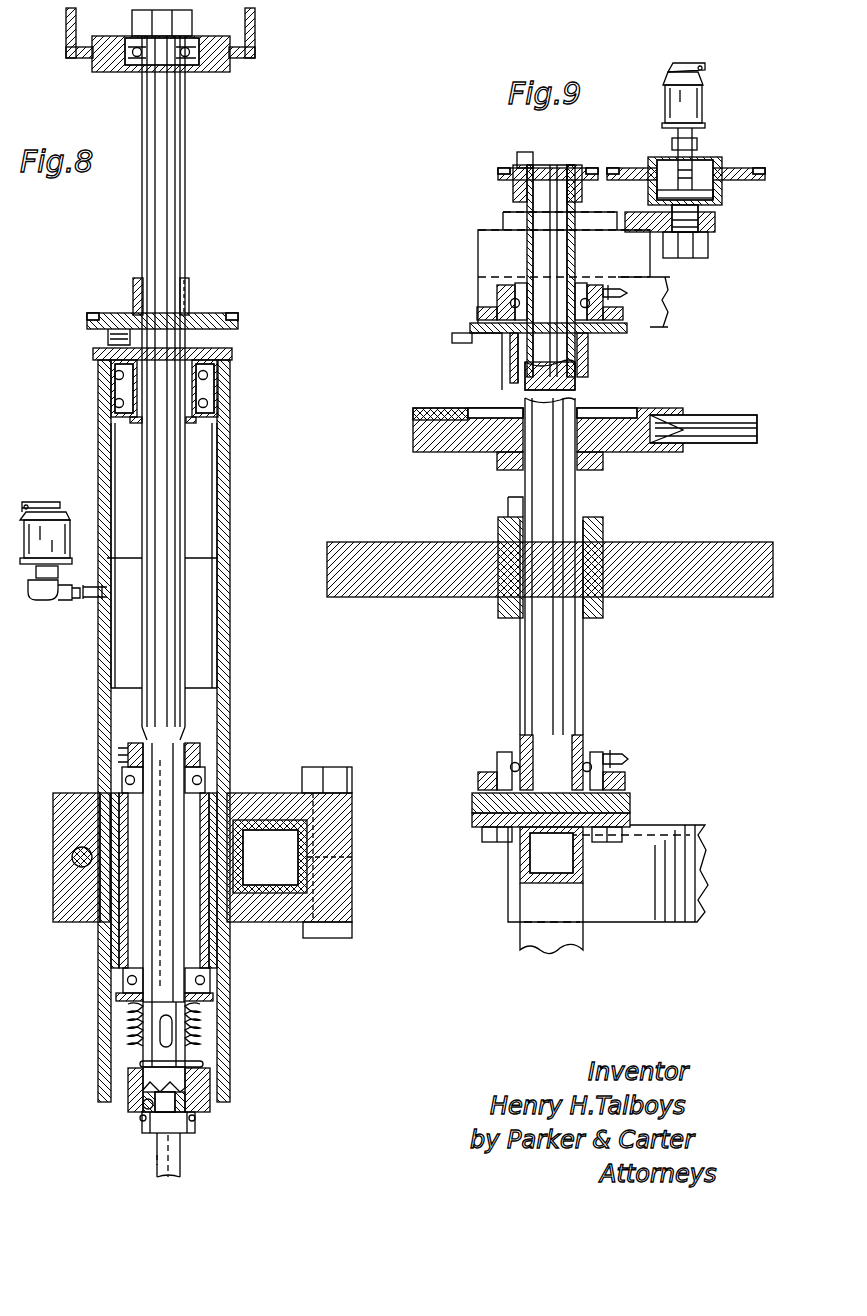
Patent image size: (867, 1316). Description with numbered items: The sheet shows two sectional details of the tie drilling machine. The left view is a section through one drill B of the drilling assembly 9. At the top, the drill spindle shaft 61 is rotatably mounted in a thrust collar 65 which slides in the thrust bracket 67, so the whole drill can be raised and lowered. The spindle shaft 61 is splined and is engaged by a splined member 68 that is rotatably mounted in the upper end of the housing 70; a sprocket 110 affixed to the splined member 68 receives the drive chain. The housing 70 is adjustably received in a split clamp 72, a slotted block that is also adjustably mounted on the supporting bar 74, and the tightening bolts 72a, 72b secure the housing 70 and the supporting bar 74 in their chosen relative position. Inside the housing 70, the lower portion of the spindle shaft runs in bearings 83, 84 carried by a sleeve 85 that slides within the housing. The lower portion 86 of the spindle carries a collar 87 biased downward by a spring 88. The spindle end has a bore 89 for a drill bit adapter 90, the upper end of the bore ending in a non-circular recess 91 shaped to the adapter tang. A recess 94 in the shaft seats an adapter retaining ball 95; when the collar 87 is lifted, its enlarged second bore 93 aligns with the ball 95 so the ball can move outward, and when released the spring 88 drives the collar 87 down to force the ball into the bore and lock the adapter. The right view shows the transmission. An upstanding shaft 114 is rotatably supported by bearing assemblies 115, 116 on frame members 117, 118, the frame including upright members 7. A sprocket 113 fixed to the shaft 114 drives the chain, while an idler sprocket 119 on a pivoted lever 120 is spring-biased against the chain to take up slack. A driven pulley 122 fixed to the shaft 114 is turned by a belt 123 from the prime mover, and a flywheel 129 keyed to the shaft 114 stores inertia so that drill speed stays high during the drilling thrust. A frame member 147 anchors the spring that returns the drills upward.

In FIG. 8, the thrust bracket 67 is at (256, 44).
In FIG. 8, the thrust collar 65 is at (208, 72).
In FIG. 8, the drill spindle shaft 61 is at (186, 214).
In FIG. 8, the splined member 68 is at (190, 290).
In FIG. 8, the sprocket 110 is at (222, 313).
In FIG. 8, the housing 70 is at (230, 497).
In FIG. 8, the split clamp 72 is at (66, 793).
In FIG. 8, the tightening bolt 72a is at (327, 767).
In FIG. 8, the tightening bolt 72b is at (72, 857).
In FIG. 8, the bearing 83 is at (202, 778).
In FIG. 8, the sleeve 85 is at (116, 940).
In FIG. 8, the supporting bar 74 is at (270, 900).
In FIG. 8, the bearing 84 is at (205, 982).
In FIG. 8, the lower portion of the spindle shaft 86 is at (186, 1010).
In FIG. 8, the non-circular recess 91 is at (160, 1033).
In FIG. 8, the spring 88 is at (205, 1045).
In FIG. 8, the drill B is at (246, 1063).
In FIG. 8, the collar 87 is at (210, 1085).
In FIG. 8, the adapter retaining ball 95 is at (143, 1104).
In FIG. 8, the recess 94 is at (140, 1119).
In FIG. 8, the second bore 93 is at (195, 1118).
In FIG. 8, the bore 89 is at (178, 1138).
In FIG. 8, the drill bit adapter 90 is at (155, 1152).
In FIG. 8, the drilling assembly 9 is at (192, 1164).
In FIG. 9, the sprocket 113 is at (560, 160).
In FIG. 9, the idler sprocket 119 is at (740, 168).
In FIG. 9, the lever 120 is at (715, 225).
In FIG. 9, the frame member 147 is at (470, 343).
In FIG. 9, the bearing assembly 116 is at (590, 340).
In FIG. 9, the frame member 118 is at (662, 327).
In FIG. 9, the driven pulley 122 is at (457, 452).
In FIG. 9, the belt 123 is at (718, 440).
In FIG. 9, the flywheel 129 is at (390, 597).
In FIG. 9, the upstanding shaft 114 is at (570, 665).
In FIG. 9, the bearing assembly 115 is at (600, 750).
In FIG. 9, the frame member 117 is at (665, 835).
In FIG. 9, the upright frame member 7 is at (548, 940).